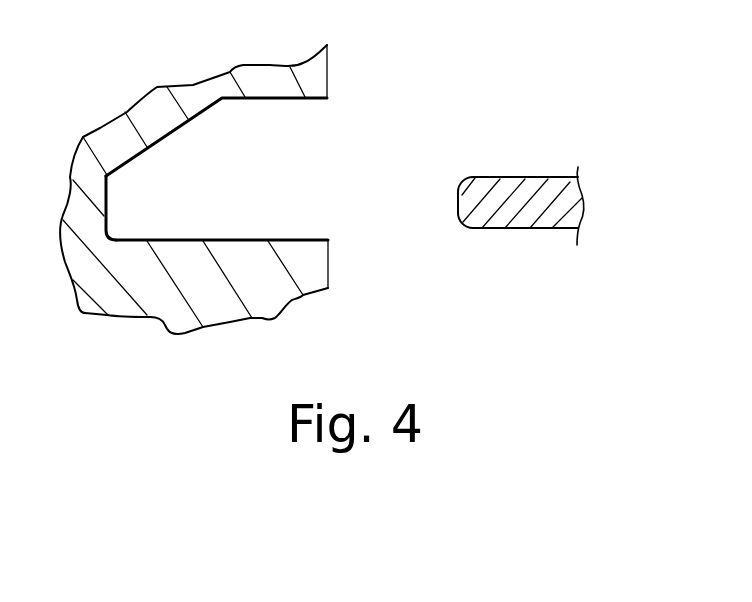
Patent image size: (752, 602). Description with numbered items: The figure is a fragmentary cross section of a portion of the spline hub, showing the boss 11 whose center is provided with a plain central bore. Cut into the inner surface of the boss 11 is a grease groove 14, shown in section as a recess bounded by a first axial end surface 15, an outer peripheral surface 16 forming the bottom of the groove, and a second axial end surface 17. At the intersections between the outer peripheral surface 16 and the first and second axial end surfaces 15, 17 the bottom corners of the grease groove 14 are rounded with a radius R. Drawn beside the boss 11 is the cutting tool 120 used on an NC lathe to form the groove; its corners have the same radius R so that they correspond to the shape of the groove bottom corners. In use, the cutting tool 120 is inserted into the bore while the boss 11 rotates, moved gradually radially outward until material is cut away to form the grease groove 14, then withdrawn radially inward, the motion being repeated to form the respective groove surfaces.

The boss 11 is at (166, 303).
The grease groove 14 is at (281, 130).
The first axial end surface 15 is at (172, 130).
The outer peripheral surface 16 is at (106, 207).
The second axial end surface 17 is at (237, 240).
The cutting tool 120 is at (525, 190).
The radius R is at (452, 162).